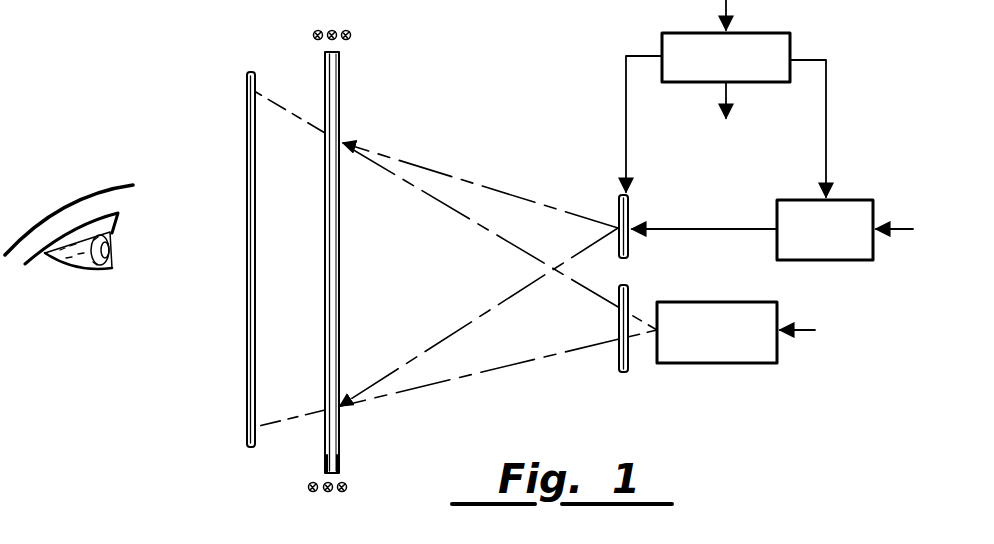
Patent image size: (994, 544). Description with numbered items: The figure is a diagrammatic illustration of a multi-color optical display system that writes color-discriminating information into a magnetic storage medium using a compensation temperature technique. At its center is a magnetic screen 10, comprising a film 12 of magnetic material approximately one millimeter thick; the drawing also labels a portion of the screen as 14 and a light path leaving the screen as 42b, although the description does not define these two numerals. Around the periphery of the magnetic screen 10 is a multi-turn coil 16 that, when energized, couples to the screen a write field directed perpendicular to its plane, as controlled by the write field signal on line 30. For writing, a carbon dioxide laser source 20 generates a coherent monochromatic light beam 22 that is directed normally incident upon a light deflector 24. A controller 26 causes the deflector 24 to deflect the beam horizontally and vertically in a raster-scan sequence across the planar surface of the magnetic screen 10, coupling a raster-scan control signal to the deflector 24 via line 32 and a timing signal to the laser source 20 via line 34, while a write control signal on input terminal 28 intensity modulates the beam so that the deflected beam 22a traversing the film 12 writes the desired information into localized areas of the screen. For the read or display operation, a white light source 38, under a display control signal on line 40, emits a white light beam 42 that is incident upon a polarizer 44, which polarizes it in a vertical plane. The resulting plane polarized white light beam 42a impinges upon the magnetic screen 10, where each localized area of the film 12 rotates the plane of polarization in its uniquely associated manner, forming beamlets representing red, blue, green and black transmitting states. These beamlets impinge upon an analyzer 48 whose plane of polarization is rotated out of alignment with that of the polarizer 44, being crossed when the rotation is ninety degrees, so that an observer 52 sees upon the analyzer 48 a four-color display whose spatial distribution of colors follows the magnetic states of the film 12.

The magnetic screen 10 is at (340, 66).
The film 12 is at (325, 466).
The magnetic film 14 is at (338, 463).
The multi-turn coil 16 is at (347, 32).
The CO2 laser source 20 is at (838, 200).
The light beam 22 is at (690, 230).
The deflected beam 22a is at (470, 182).
The light deflector 24 is at (628, 207).
The controller 26 is at (762, 34).
The input terminal 28 is at (905, 232).
The write field signal line 30 is at (730, 100).
The raster-scan control line 32 is at (626, 98).
The timing signal line 34 is at (826, 103).
The white light source 38 is at (726, 302).
The display control signal line 40 is at (805, 331).
The white light beam 42 is at (640, 312).
The plane polarized white light beam 42a is at (495, 235).
The transmitted light beam 42b is at (302, 120).
The polarizer 44 is at (626, 368).
The analyzer 48 is at (247, 96).
The observer 52 is at (70, 269).